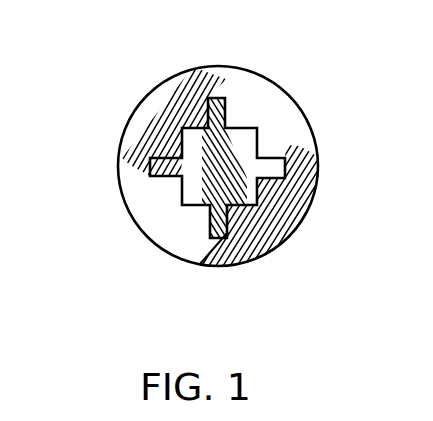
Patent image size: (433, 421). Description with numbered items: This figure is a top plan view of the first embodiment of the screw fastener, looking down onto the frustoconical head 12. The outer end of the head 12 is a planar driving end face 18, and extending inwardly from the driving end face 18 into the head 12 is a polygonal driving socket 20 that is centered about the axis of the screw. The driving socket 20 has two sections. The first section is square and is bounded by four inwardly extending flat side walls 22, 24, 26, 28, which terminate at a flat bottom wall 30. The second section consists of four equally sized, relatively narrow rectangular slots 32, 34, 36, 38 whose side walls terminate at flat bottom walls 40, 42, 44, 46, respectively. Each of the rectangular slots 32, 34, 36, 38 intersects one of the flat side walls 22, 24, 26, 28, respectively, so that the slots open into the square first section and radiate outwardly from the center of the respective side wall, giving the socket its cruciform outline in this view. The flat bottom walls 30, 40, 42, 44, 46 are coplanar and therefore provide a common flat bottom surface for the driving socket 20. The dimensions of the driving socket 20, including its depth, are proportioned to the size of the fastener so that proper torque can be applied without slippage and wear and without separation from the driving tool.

The frustoconical head 12 is at (233, 66).
The planar driving end face 18 is at (297, 130).
The polygonal driving socket 20 is at (260, 119).
The flat side wall 22 is at (160, 123).
The flat side wall 24 is at (182, 193).
The flat side wall 26 is at (268, 258).
The flat side wall 28 is at (255, 147).
The flat bottom wall 30 is at (210, 210).
The rectangular slot 32 is at (209, 96).
The rectangular slot 34 is at (150, 173).
The rectangular slot 36 is at (215, 240).
The rectangular slot 38 is at (316, 188).
The flat bottom wall 40 is at (220, 105).
The flat bottom wall 42 is at (160, 160).
The flat bottom wall 44 is at (210, 230).
The flat bottom wall 46 is at (283, 165).